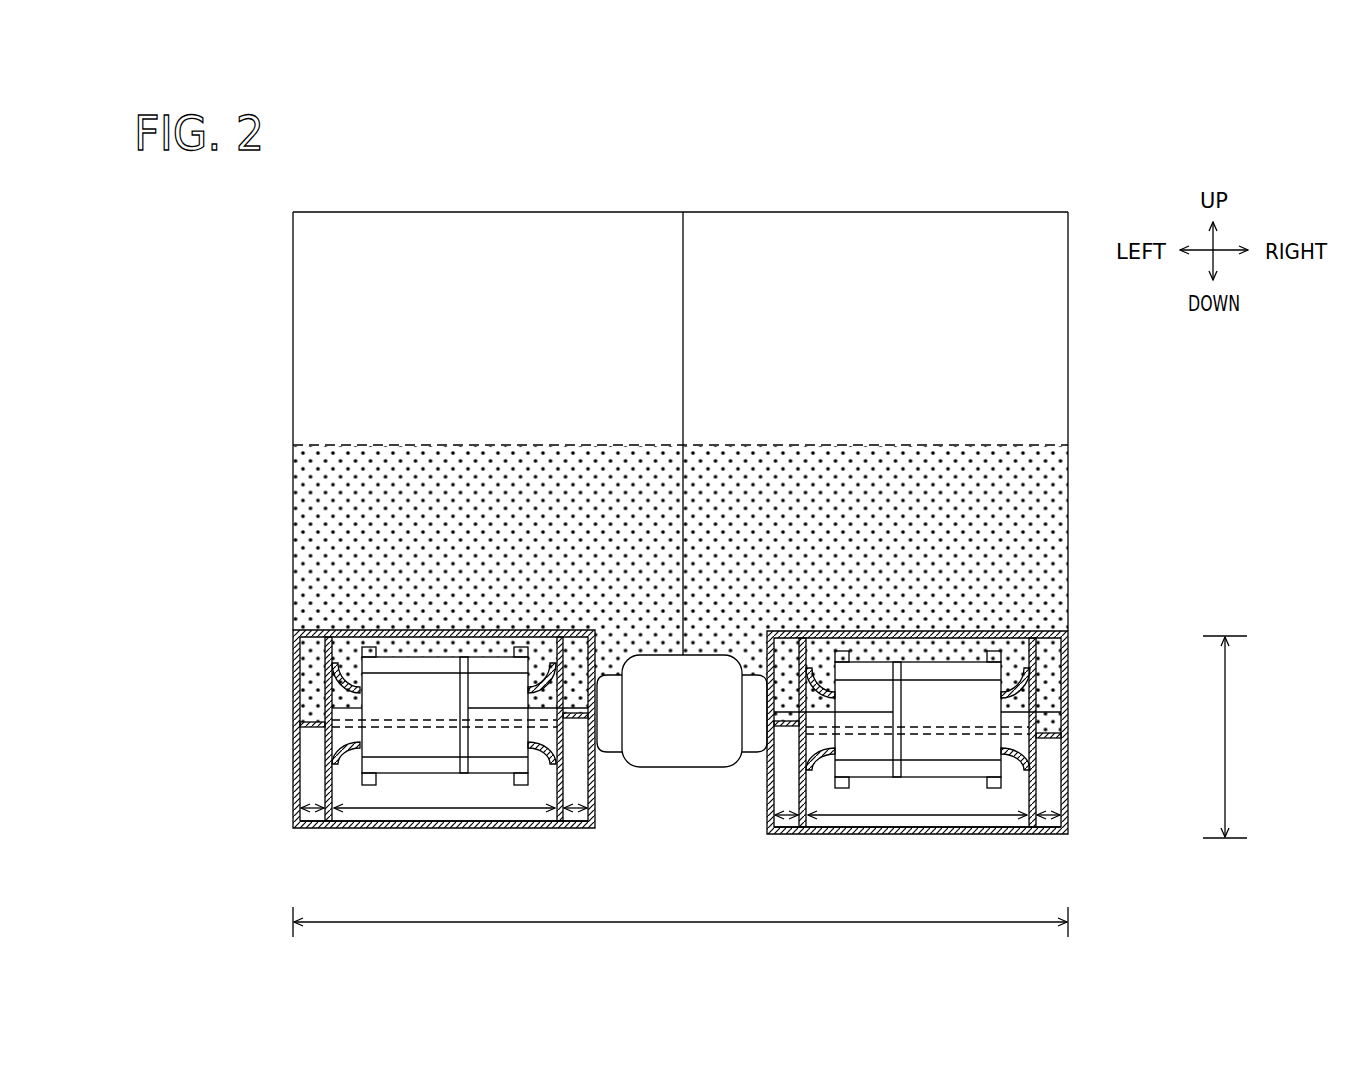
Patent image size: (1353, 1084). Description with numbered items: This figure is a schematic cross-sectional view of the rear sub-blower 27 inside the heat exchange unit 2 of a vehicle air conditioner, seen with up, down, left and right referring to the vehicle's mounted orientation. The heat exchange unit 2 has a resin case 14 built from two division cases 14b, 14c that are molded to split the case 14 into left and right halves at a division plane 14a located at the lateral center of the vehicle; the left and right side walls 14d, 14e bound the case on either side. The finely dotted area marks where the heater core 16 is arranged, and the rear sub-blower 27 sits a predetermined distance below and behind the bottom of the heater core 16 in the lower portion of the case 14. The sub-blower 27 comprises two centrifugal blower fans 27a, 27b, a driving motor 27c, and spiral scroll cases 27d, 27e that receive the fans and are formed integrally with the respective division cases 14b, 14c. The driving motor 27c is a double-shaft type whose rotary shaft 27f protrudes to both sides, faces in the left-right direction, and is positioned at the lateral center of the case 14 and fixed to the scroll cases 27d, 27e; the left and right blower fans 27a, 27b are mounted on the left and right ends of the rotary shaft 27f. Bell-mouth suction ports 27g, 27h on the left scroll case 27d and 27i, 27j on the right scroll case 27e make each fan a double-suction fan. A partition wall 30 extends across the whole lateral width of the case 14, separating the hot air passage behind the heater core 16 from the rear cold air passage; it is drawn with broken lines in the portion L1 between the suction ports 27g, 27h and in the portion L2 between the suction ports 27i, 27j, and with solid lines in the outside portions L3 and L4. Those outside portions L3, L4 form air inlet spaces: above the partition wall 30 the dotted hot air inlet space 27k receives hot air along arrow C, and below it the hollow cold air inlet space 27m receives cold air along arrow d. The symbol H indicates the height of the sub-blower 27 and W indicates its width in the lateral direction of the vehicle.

The heat exchange unit 2 is at (909, 203).
The case 14 is at (673, 387).
The division plane 14a is at (683, 293).
The left division case 14b is at (637, 212).
The right division case 14c is at (718, 212).
The left side wall 14d is at (293, 395).
The right side wall 14e is at (1068, 388).
The heater core 16 is at (375, 447).
The rear sub-blower 27 is at (693, 735).
The left blower fan 27a is at (398, 766).
The right blower fan 27b is at (947, 750).
The driving motor 27c is at (700, 670).
The left scroll case 27d is at (445, 828).
The right scroll case 27e is at (995, 834).
The rotary shaft 27f is at (500, 710).
The suction port 27g is at (316, 722).
The suction port 27h is at (605, 700).
The suction port 27i is at (757, 700).
The suction port 27j is at (1050, 733).
The hot air inlet space 27k is at (318, 650).
The cold air inlet space 27m is at (313, 770).
The partition wall 30 is at (360, 828).
The arrow c C is at (320, 690).
The arrow d is at (312, 754).
The portion L1 is at (444, 795).
The portion L2 is at (917, 802).
The outside portions L3 is at (310, 828).
The outside portions L4 is at (796, 834).
The width W is at (680, 915).
The height H is at (1225, 737).